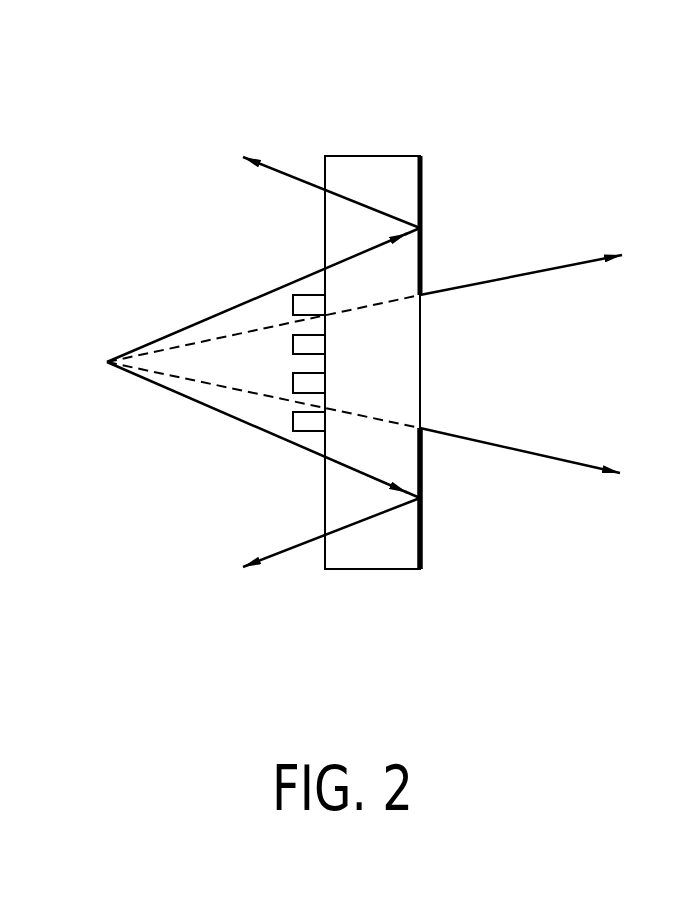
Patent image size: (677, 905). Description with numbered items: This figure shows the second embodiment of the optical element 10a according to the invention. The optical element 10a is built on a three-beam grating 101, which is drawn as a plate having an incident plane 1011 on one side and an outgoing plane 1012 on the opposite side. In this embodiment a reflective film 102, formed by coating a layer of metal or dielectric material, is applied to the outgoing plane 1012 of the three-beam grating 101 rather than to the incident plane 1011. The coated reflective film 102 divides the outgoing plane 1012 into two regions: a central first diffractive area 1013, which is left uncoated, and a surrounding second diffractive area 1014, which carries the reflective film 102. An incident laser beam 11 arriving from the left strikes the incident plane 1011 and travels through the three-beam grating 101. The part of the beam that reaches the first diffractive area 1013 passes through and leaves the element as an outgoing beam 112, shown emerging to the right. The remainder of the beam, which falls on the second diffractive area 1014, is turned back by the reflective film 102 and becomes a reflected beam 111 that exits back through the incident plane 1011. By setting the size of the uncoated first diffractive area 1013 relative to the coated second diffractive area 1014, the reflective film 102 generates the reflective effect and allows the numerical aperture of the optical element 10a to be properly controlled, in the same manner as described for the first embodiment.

The optical element 10a is at (502, 140).
The incident plane 1011 is at (329, 177).
The outgoing plane 1012 is at (425, 180).
The first diffractive area 1013 is at (480, 375).
The second diffractive area 1014 is at (425, 553).
The three-beam grating 101 is at (342, 543).
The reflective film 102 is at (420, 568).
The incident laser beam 11 is at (165, 335).
The reflected beam 111 is at (295, 183).
The outgoing beam 112 is at (520, 275).